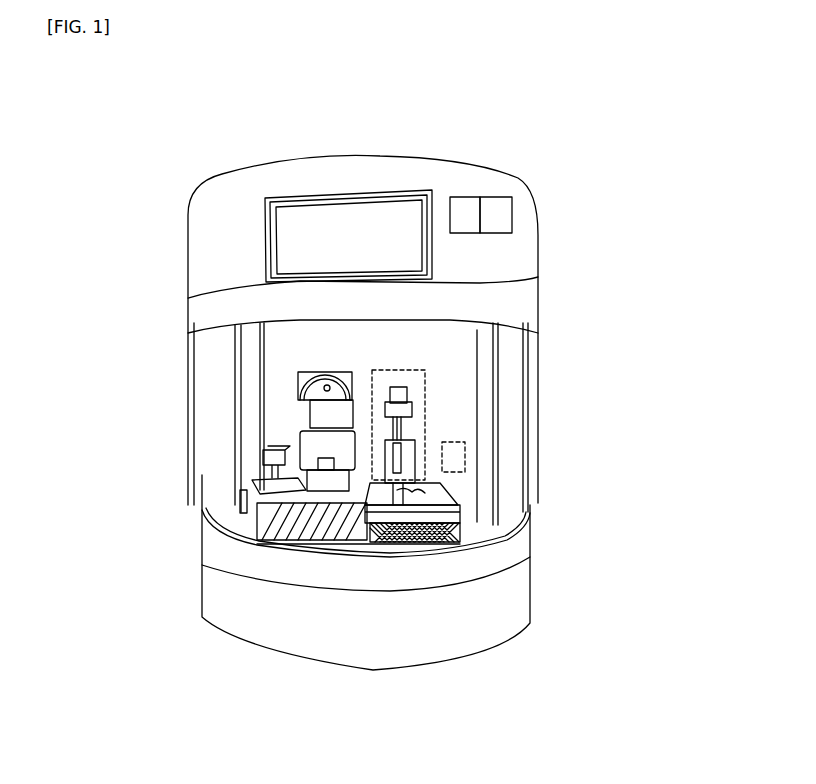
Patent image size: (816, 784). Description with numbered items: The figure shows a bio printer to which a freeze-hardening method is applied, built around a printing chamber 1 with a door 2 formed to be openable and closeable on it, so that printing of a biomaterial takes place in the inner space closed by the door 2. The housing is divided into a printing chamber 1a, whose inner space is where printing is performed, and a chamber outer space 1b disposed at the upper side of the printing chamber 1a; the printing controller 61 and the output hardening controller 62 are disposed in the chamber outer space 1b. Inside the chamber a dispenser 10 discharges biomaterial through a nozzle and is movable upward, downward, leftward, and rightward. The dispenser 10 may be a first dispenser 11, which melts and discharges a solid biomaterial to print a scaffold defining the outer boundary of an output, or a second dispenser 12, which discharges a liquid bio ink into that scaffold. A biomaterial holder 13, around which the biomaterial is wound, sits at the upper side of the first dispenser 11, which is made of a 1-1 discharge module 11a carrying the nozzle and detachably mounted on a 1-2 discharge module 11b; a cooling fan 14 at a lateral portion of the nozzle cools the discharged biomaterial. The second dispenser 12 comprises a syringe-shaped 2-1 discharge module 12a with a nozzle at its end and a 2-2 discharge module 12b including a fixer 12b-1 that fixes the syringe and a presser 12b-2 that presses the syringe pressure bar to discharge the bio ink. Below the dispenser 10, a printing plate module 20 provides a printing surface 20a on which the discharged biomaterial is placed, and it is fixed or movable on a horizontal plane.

The printing chamber 1 is at (446, 356).
The printing chamber 1a is at (487, 263).
The chamber outer space 1b is at (480, 310).
The door 2 is at (235, 492).
The dispenser 10 is at (393, 405).
The first dispenser 11 is at (373, 469).
The 1-1 discharge module 11a is at (298, 490).
The 1-2 discharge module 11b is at (318, 432).
The second dispenser 12 is at (388, 405).
The 2-1 discharge module 12a is at (375, 482).
The 2-2 discharge module 12b is at (261, 303).
The fixer 12b-1 is at (383, 430).
The presser 12b-2 is at (397, 397).
The biomaterial holder 13 is at (325, 375).
The cooling fan 14 is at (182, 504).
The printing plate module 20 is at (535, 497).
The printing surface 20a is at (457, 492).
The printing controller 61 is at (460, 195).
The output hardening controller 62 is at (498, 195).